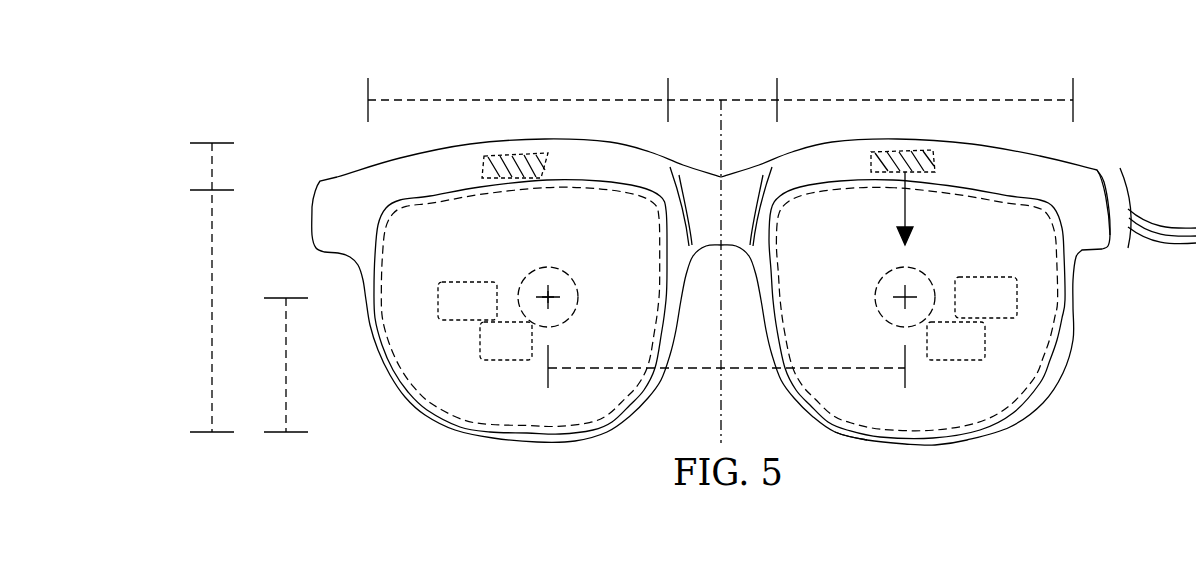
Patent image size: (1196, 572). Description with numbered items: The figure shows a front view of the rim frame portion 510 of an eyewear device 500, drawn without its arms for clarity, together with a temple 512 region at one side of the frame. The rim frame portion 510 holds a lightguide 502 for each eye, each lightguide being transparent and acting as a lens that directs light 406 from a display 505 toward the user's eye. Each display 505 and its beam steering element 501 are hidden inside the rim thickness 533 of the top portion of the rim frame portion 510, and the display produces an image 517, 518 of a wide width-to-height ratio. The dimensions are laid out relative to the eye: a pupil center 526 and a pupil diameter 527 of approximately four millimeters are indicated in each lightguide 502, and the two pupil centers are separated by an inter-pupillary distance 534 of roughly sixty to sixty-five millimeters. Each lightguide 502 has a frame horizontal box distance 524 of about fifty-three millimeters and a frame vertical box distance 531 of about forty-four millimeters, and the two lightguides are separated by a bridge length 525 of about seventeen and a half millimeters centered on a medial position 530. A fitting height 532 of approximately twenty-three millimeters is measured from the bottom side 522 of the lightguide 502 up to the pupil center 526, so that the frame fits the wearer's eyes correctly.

The eyewear device 500 is at (1097, 52).
The beam steering element 501 is at (482, 168).
The lightguide 502 is at (719, 309).
The display 505 is at (946, 166).
The light 406 is at (897, 193).
The rim frame portion 510 is at (1060, 362).
The temple 512 is at (1175, 205).
The image 517 is at (438, 290).
The image 518 is at (490, 362).
The bottom side 522 is at (927, 457).
The frame horizontal box distance 524 is at (545, 98).
The bridge length 525 is at (556, 178).
The pupil center 526 is at (560, 277).
The pupil diameter 527 is at (540, 275).
The medial position 530 is at (720, 400).
The frame vertical box distance 531 is at (213, 253).
The fitting height 532 is at (287, 403).
The rim thickness 533 is at (213, 178).
The inter-pupillary distance 534 is at (598, 365).